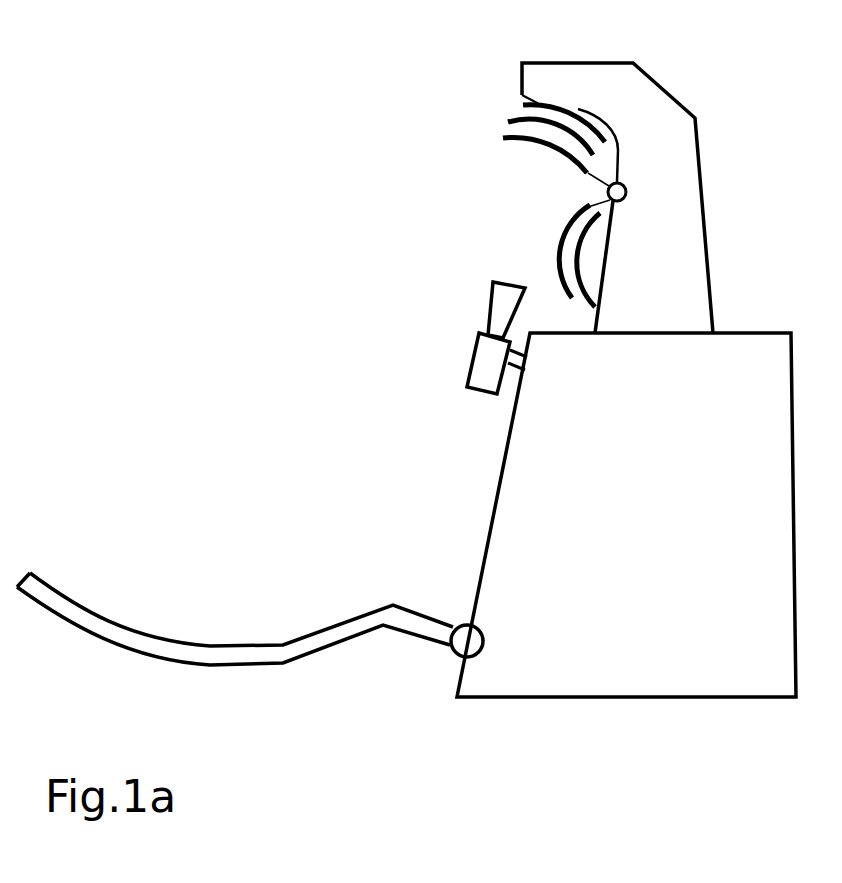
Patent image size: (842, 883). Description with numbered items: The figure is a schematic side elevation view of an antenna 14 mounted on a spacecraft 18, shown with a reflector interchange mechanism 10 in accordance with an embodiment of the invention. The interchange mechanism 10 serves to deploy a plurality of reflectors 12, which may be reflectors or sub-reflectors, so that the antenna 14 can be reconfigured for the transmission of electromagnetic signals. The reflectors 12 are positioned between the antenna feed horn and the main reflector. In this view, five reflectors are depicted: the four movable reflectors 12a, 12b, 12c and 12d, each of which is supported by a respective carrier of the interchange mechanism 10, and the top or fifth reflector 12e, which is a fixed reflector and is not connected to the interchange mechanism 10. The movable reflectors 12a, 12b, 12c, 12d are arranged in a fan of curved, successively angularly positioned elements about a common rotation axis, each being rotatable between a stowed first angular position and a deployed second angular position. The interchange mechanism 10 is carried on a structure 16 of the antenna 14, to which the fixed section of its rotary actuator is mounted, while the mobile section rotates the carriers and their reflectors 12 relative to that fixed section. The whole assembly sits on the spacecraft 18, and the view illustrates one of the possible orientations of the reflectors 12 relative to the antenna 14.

The interchange mechanism 10 is at (655, 175).
The reflector 12 is at (550, 170).
The reflector 12a is at (585, 297).
The reflector 12b is at (553, 280).
The reflector 12c is at (503, 141).
The reflector 12d is at (515, 114).
The fifth reflector 12e is at (521, 103).
The antenna 14 is at (215, 213).
The structure 16 is at (598, 318).
The spacecraft 18 is at (732, 332).